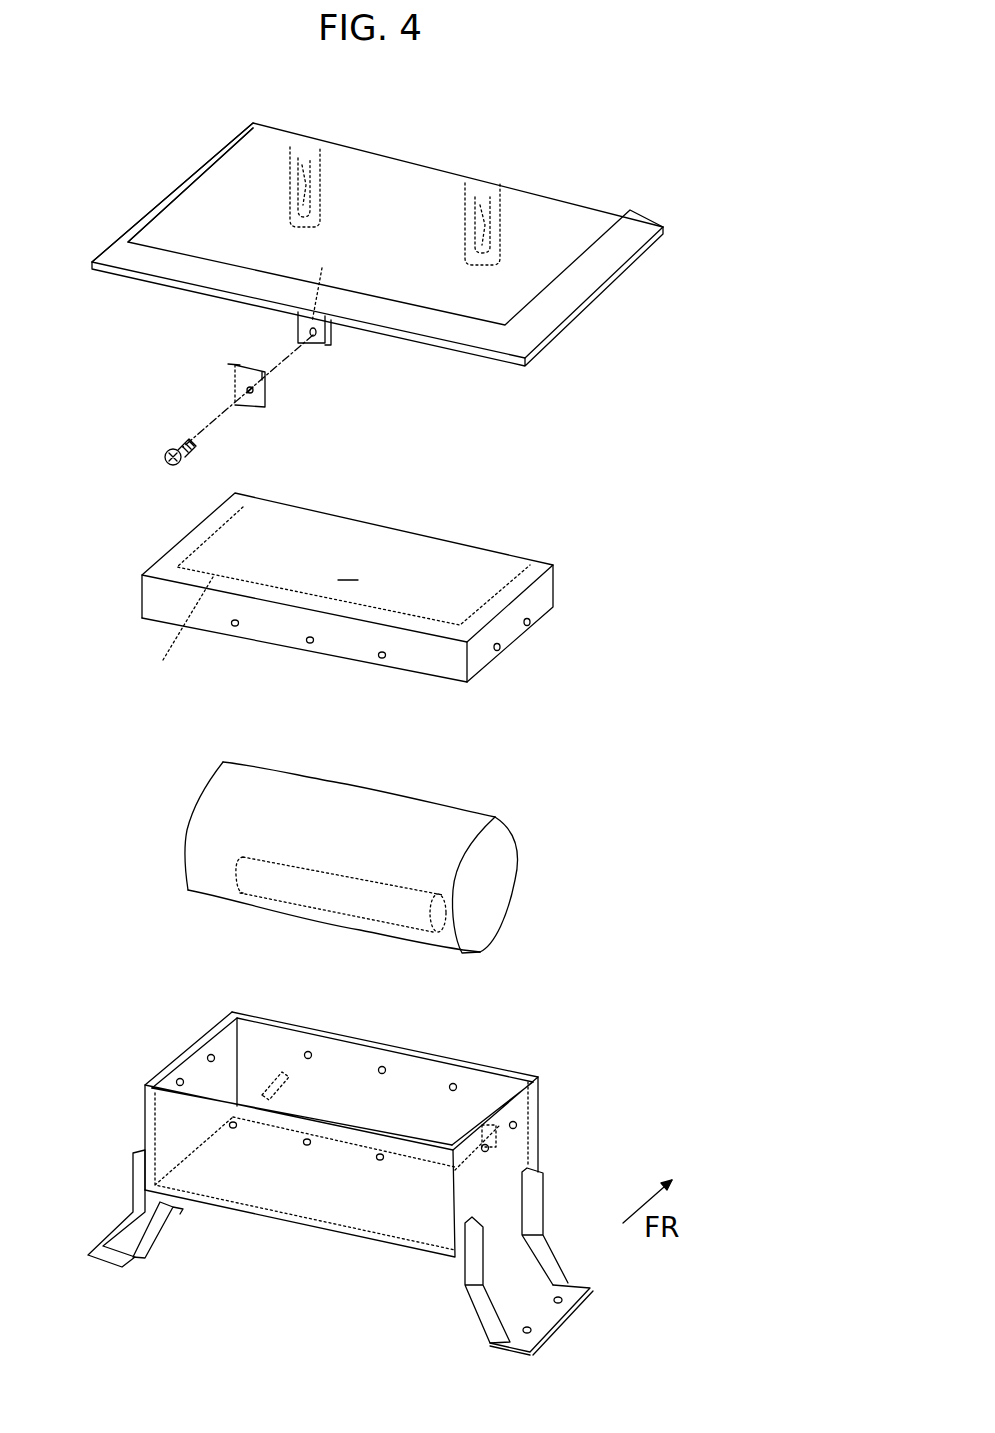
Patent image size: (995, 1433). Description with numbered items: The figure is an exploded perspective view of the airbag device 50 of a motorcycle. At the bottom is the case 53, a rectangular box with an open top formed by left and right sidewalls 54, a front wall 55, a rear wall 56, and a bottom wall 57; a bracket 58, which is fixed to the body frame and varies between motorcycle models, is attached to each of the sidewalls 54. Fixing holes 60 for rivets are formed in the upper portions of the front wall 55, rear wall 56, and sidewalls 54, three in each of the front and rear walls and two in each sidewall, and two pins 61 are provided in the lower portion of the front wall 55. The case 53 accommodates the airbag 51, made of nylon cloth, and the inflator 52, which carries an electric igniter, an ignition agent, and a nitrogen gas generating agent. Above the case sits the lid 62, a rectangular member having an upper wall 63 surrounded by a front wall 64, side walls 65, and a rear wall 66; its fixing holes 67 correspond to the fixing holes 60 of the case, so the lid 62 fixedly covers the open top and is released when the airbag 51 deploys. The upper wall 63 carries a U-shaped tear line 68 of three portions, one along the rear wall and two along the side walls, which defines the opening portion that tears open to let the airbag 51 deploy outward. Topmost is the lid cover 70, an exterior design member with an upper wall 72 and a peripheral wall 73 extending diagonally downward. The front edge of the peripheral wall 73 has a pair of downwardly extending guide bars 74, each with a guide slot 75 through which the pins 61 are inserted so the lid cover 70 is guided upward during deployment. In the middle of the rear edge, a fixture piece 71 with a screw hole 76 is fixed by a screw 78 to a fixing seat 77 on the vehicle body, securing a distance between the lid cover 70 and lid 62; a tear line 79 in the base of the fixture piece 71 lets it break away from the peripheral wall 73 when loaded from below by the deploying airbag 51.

The airbag device 50 is at (708, 183).
The airbag 51 is at (306, 845).
The inflator 52 is at (243, 878).
The case 53 is at (356, 1158).
The sidewalls 54 is at (193, 1058).
The front wall 55 is at (340, 1058).
The rear wall 56 is at (335, 1195).
The bottom wall 57 is at (307, 1195).
The bracket 58 is at (105, 1240).
The fixing holes 60 is at (211, 1052).
The pins 61 is at (268, 1090).
The lid 62 is at (358, 590).
The upper wall 63 is at (353, 525).
The front wall 64 is at (497, 565).
The side walls 65 is at (148, 570).
The rear wall 66 is at (340, 648).
The fixing holes 67 is at (235, 628).
The tear line 68 is at (170, 629).
The lid cover 70 is at (380, 279).
The fixture piece 71 is at (351, 364).
The upper wall 72 is at (376, 221).
The peripheral wall 73 is at (152, 208).
The guide bars 74 is at (318, 182).
The guide slot 75 is at (306, 160).
The screw hole 76 is at (314, 338).
The fixing seat 77 is at (235, 380).
The screw 78 is at (190, 450).
The tear line 79 is at (325, 278).